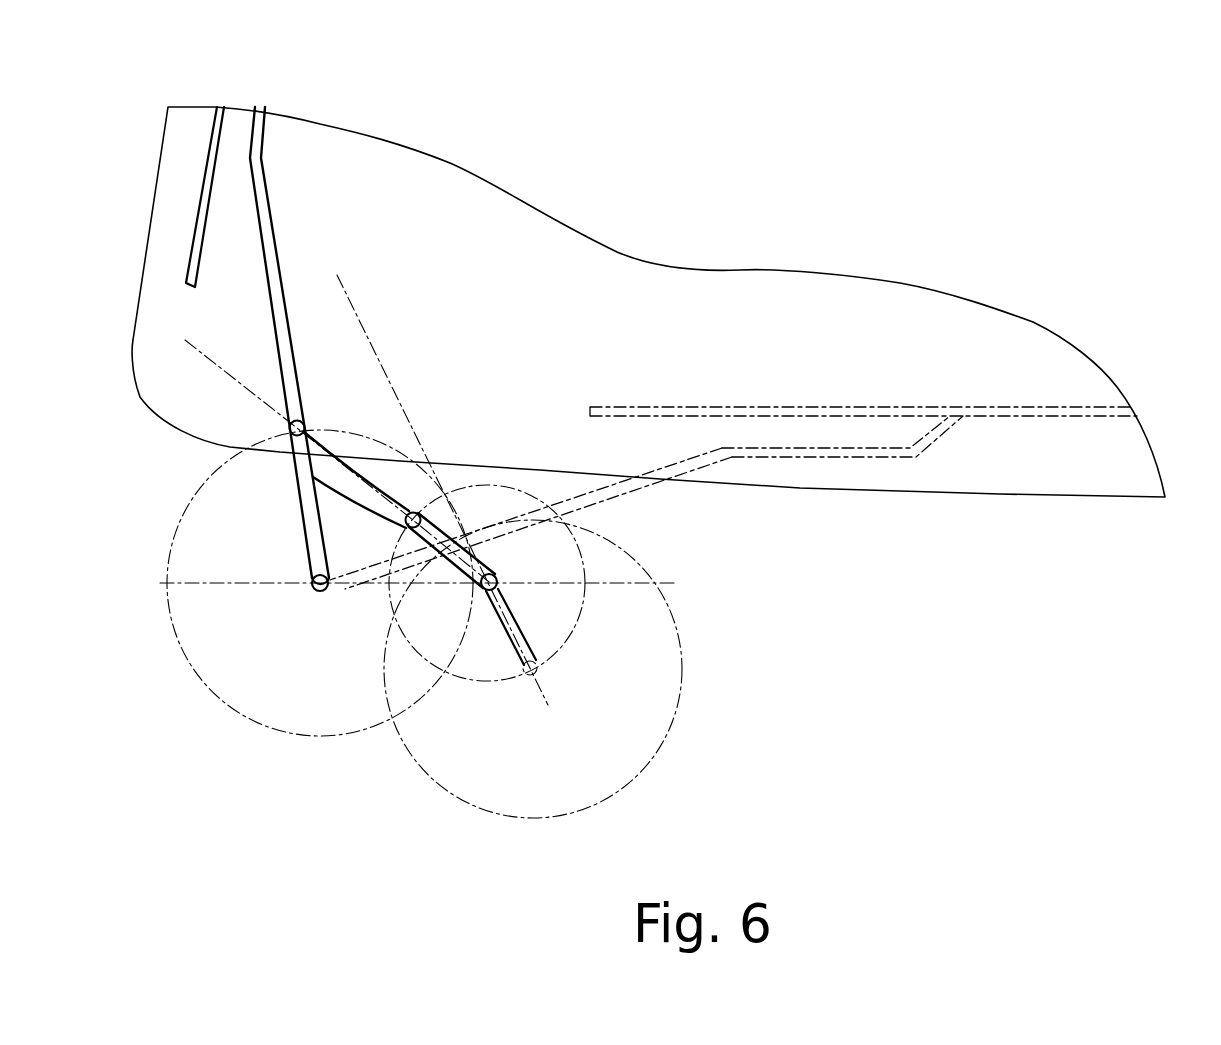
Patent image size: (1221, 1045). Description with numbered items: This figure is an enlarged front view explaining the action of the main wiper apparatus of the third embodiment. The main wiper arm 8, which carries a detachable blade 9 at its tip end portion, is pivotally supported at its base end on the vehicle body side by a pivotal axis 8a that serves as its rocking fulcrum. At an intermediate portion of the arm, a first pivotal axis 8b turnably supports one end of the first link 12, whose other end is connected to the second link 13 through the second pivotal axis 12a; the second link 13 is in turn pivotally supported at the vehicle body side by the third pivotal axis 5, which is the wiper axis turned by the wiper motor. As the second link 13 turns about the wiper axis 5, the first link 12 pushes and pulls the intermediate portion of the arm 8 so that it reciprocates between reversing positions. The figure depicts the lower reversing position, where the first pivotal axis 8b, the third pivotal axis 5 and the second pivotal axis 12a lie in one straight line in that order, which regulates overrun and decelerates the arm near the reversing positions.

The main wiper axis 5 is at (497, 578).
The main wiper arm 8 is at (267, 233).
The pivotal axis 8a is at (317, 593).
The first pivotal axis 8b is at (303, 423).
The blade 9 is at (190, 263).
The first link 12 is at (358, 495).
The second pivotal axis 12a is at (414, 510).
The second link 13 is at (478, 508).